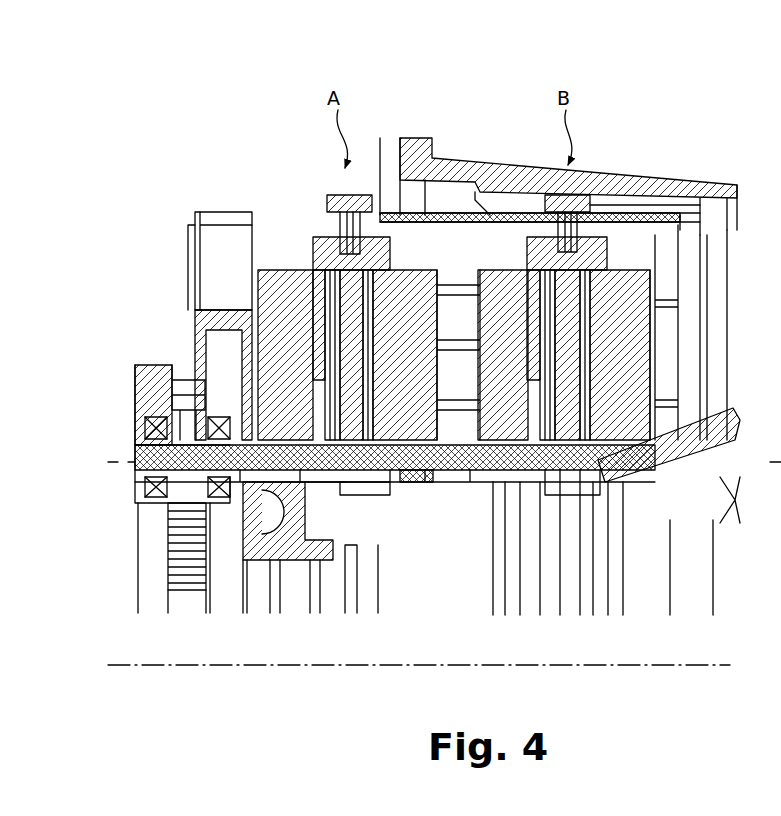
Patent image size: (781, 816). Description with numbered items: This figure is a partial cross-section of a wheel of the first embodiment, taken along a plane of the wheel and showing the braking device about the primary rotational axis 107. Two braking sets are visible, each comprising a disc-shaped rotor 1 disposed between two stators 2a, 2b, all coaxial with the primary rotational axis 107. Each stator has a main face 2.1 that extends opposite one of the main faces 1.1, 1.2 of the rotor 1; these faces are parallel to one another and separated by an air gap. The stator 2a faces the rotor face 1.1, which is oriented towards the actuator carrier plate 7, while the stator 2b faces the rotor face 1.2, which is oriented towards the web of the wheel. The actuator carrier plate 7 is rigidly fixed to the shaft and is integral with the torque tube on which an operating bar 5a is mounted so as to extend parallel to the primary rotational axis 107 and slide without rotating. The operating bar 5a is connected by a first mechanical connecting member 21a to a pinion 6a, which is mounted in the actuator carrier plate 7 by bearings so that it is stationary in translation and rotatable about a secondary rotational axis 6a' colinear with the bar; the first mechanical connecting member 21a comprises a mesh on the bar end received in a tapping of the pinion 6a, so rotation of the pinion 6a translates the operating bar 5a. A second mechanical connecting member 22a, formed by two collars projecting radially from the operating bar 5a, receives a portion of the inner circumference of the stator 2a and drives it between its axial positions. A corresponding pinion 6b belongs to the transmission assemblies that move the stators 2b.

The rotor 1 is at (335, 235).
The main face of the rotor 1.1 is at (330, 305).
The main face of the rotor 1.2 is at (368, 312).
The main face of the stator 2.1 is at (366, 325).
The stator 2a is at (307, 425).
The stator 2b is at (405, 438).
The second mechanical connecting member 22a is at (338, 498).
The first mechanical connecting member 21a is at (146, 440).
The operating bar 5a is at (252, 462).
The pinion 6a is at (170, 579).
The secondary rotational axis 6a' is at (114, 484).
The pinion 6b is at (776, 463).
The actuator carrier plate 7 is at (298, 548).
The primary rotational axis 107 is at (678, 668).